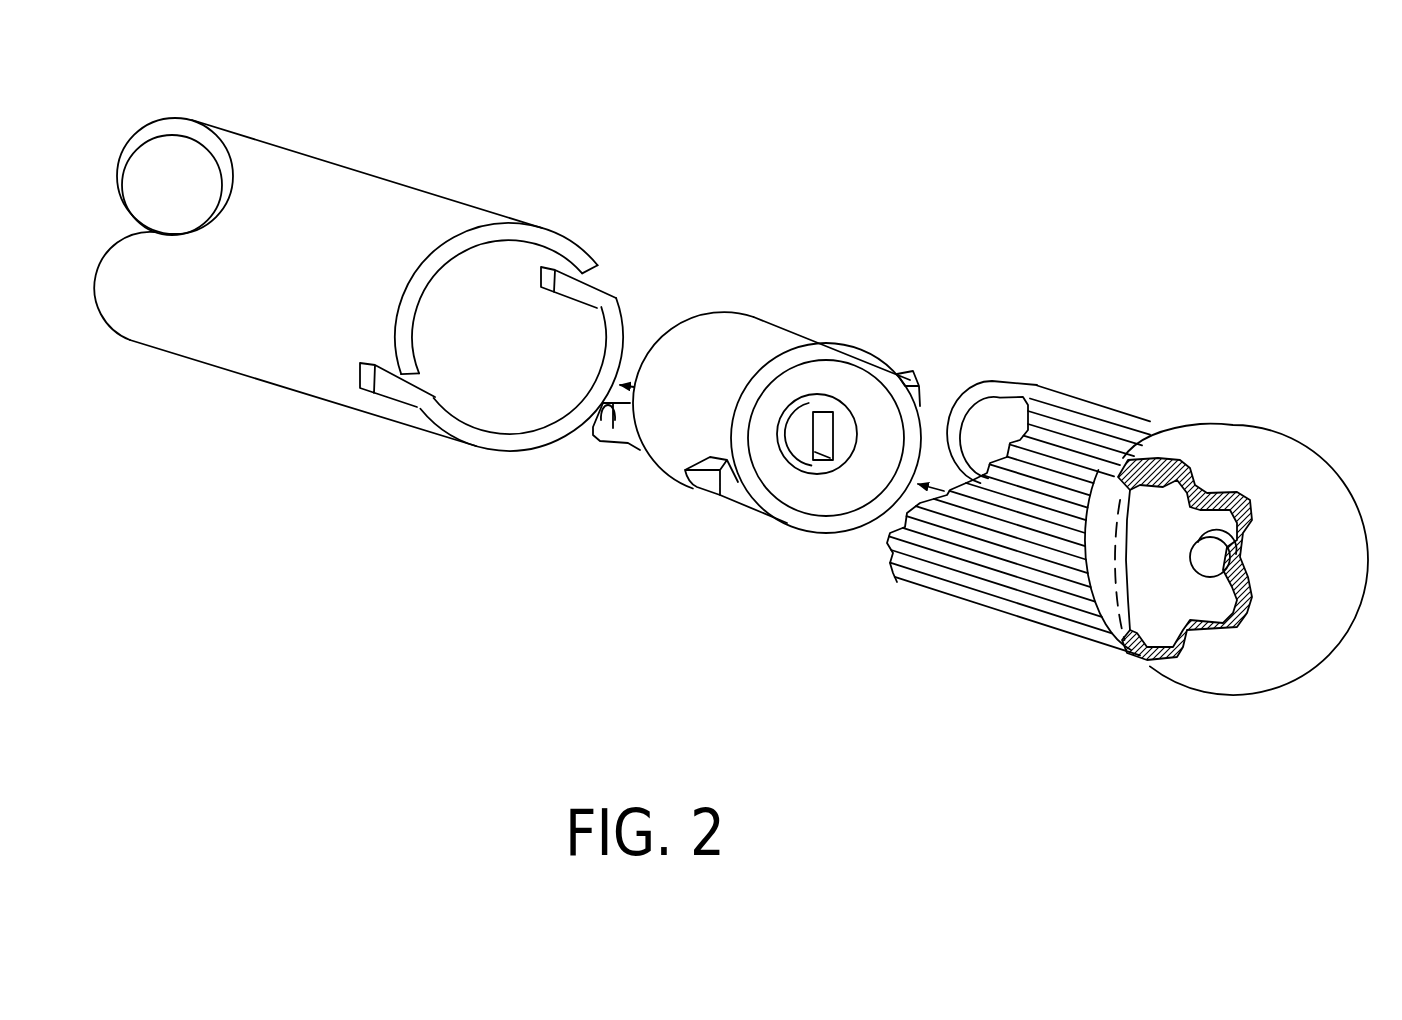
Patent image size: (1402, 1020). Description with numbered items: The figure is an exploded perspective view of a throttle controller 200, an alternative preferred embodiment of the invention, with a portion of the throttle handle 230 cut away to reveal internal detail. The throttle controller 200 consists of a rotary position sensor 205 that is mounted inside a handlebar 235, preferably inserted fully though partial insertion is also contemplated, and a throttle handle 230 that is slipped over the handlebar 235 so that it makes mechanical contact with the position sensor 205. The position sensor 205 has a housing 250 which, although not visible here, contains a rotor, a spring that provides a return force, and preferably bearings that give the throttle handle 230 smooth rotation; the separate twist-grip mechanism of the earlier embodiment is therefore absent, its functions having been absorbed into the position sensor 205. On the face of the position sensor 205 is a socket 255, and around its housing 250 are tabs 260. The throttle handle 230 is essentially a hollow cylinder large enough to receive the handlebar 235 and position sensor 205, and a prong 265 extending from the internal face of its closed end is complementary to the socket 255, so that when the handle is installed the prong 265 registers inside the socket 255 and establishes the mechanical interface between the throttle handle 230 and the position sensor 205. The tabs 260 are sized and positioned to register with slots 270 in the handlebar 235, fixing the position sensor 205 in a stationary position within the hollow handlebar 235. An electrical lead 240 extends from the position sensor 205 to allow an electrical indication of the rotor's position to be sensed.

The throttle controller 200 is at (1027, 228).
The rotary position sensor 205 is at (676, 543).
The throttle handle 230 is at (1110, 416).
The handlebar 235 is at (364, 193).
The electrical lead 240 is at (618, 433).
The housing 250 is at (753, 333).
The socket 255 is at (823, 425).
The tabs 260 is at (920, 392).
The prong 265 is at (1215, 560).
The slots 270 is at (608, 285).